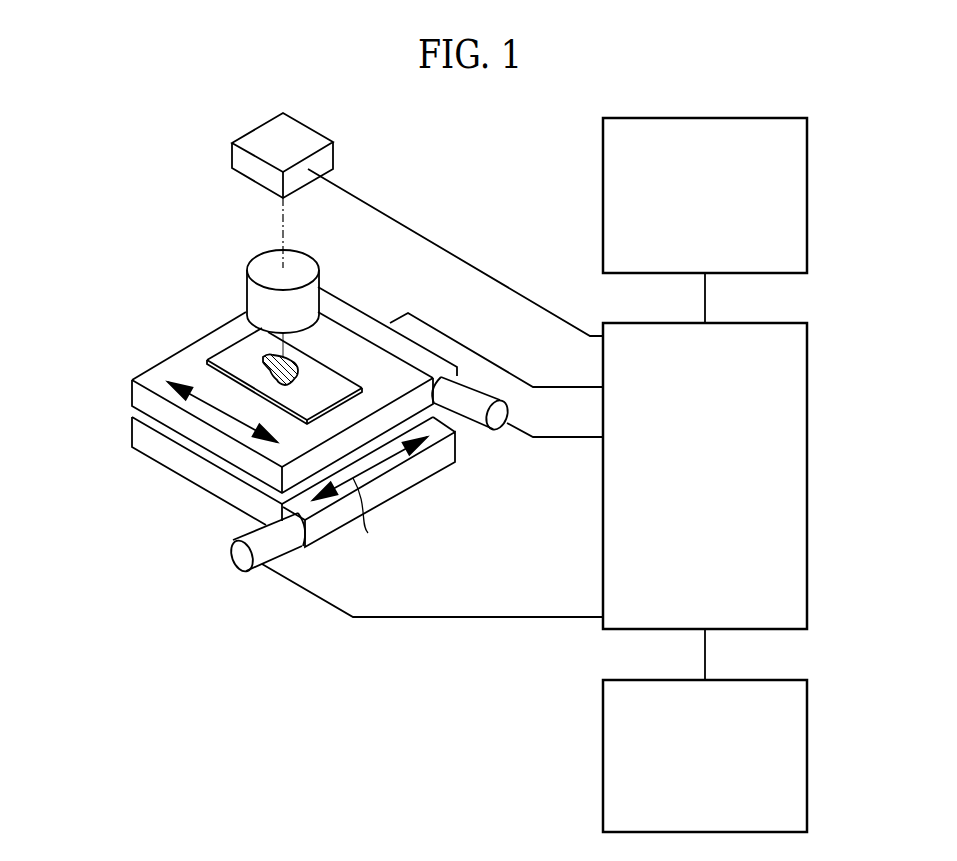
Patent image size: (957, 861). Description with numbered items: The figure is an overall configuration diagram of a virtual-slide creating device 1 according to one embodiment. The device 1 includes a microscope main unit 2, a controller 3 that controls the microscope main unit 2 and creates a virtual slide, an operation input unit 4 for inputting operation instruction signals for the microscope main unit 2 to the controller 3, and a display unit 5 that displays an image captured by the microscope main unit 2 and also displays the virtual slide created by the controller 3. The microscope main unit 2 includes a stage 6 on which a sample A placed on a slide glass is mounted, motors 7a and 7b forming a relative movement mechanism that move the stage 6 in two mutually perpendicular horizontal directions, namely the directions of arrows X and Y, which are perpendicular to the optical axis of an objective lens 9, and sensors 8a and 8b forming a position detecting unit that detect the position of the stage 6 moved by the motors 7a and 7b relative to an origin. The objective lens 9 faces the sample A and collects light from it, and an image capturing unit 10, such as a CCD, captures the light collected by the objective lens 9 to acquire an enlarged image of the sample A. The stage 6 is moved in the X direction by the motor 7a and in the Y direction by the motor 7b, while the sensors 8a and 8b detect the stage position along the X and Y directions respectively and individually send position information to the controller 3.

The virtual-slide creating device 1 is at (538, 140).
The microscope main unit 2 is at (162, 247).
The controller 3 is at (807, 468).
The operation input unit 4 is at (807, 751).
The display unit 5 is at (807, 190).
The stage 6 is at (122, 375).
The motor 7a is at (497, 417).
The motor 7b is at (240, 556).
The sensor 8a is at (357, 308).
The sensor 8b is at (421, 470).
The objective lens 9 is at (250, 258).
The image capturing unit 10 is at (307, 126).
The sample A is at (294, 363).